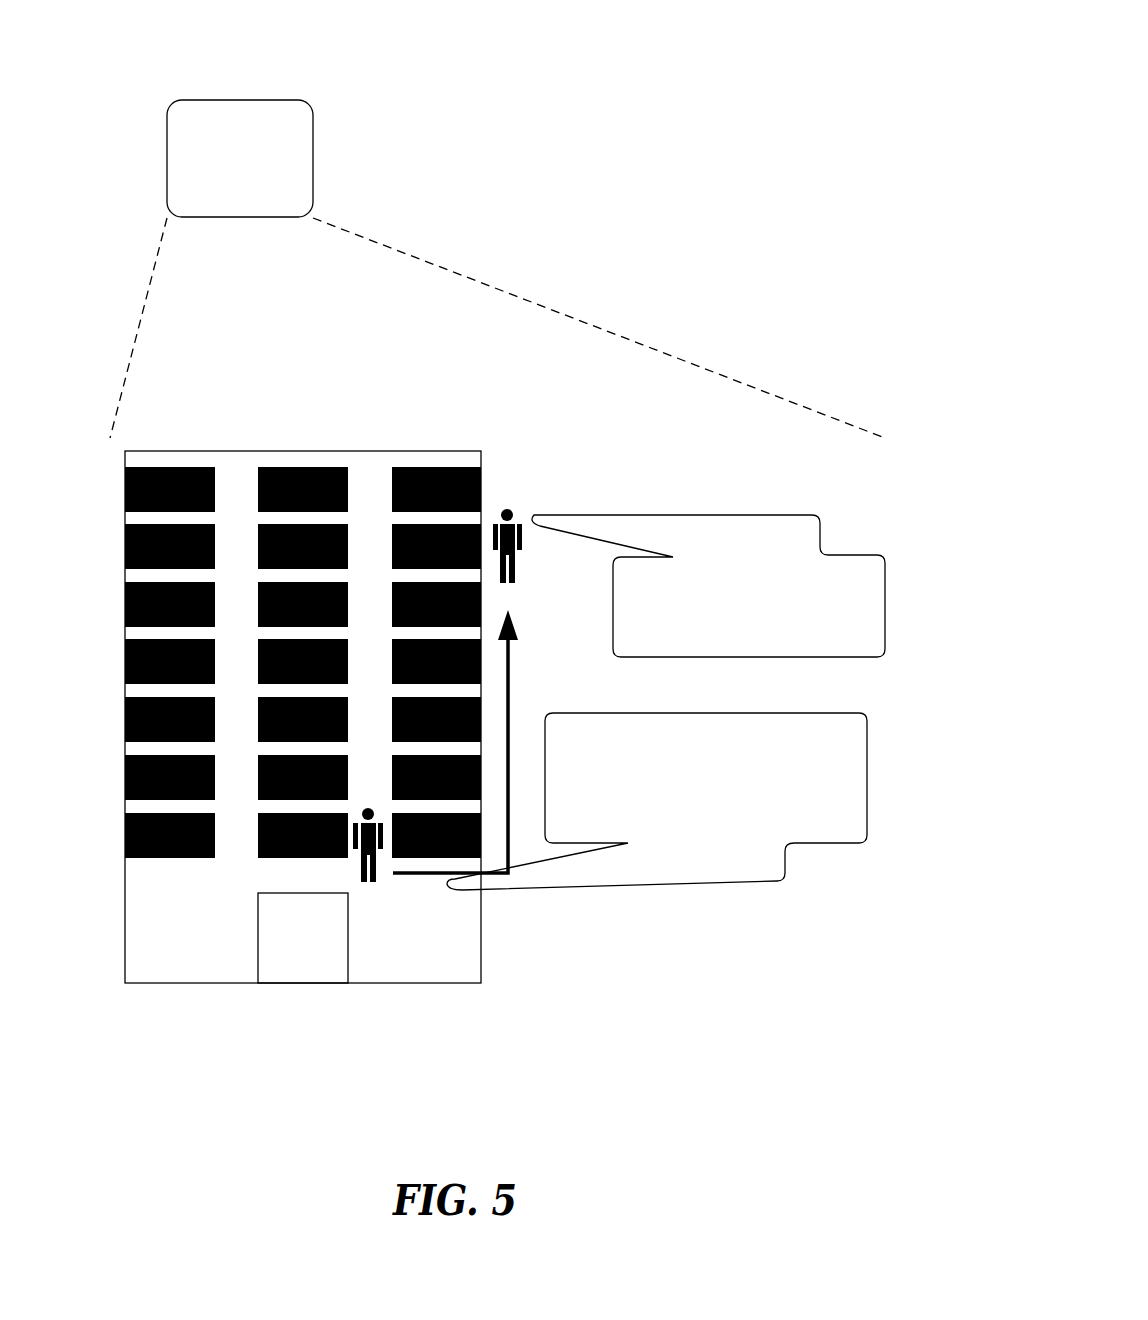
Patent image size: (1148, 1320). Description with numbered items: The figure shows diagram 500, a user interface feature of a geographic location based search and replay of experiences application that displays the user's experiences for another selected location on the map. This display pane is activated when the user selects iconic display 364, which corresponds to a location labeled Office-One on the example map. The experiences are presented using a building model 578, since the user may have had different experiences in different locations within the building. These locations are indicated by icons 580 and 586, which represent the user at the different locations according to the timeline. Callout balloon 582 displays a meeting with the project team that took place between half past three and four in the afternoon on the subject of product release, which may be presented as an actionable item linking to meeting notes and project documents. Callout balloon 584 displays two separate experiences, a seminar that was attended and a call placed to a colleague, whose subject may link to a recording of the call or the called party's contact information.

The diagram 500 is at (752, 52).
The iconic display 364 is at (231, 87).
The building 578 is at (270, 433).
The icon 580 is at (533, 491).
The callout balloon 582 is at (778, 491).
The callout balloon 584 is at (806, 705).
The icon 586 is at (371, 890).